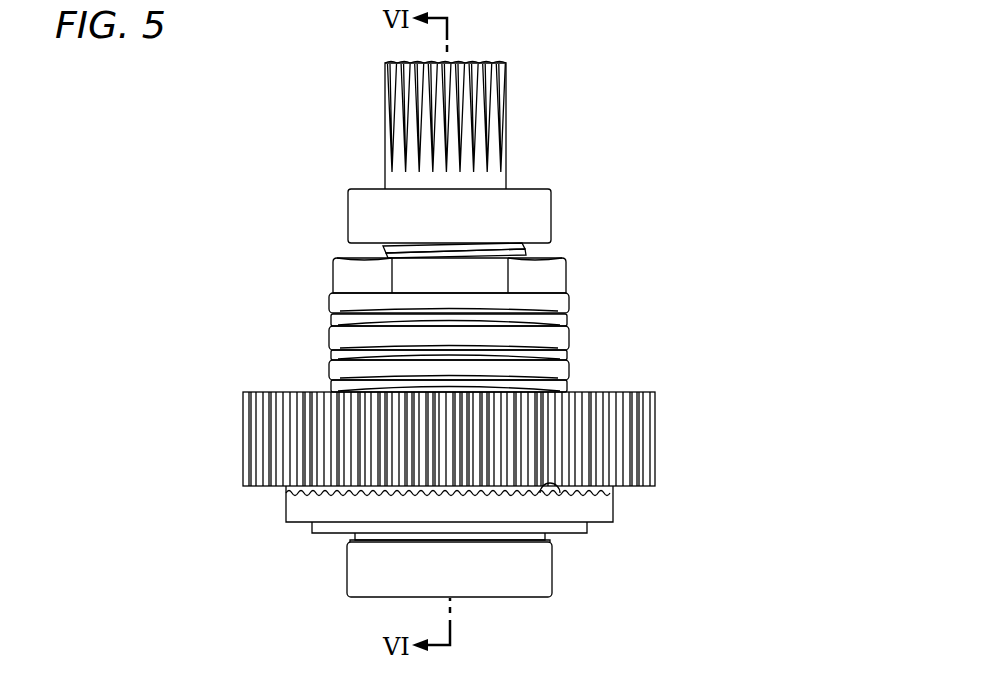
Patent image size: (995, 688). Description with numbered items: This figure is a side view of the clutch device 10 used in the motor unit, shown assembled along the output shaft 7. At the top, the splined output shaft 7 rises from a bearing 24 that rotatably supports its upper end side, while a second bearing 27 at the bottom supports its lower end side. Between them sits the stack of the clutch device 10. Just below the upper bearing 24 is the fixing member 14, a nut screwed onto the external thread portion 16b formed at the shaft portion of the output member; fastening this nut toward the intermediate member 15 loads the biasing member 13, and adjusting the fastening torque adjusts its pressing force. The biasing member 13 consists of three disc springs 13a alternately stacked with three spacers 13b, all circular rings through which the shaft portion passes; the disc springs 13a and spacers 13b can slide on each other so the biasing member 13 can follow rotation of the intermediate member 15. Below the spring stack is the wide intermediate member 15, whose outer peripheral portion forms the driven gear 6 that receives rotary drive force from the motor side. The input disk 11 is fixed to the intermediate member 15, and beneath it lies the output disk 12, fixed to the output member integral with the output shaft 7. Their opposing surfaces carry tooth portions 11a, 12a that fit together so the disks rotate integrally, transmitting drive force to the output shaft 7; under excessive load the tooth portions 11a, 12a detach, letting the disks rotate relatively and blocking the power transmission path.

The driven gear 6 is at (414, 404).
The output shaft 7 is at (496, 120).
The clutch device 10 is at (604, 158).
The input disk 11 is at (449, 509).
The tooth portion 11a is at (584, 497).
The output disk 12 is at (416, 519).
The tooth portion 12a is at (558, 472).
The biasing member 13 is at (469, 311).
The disc spring 13a is at (569, 320).
The spacer 13b is at (569, 300).
The fixing member 14 is at (333, 272).
The intermediate member 15 is at (276, 392).
The external thread portion 16b is at (525, 248).
The bearing 24 is at (548, 213).
The bearing 27 is at (552, 577).